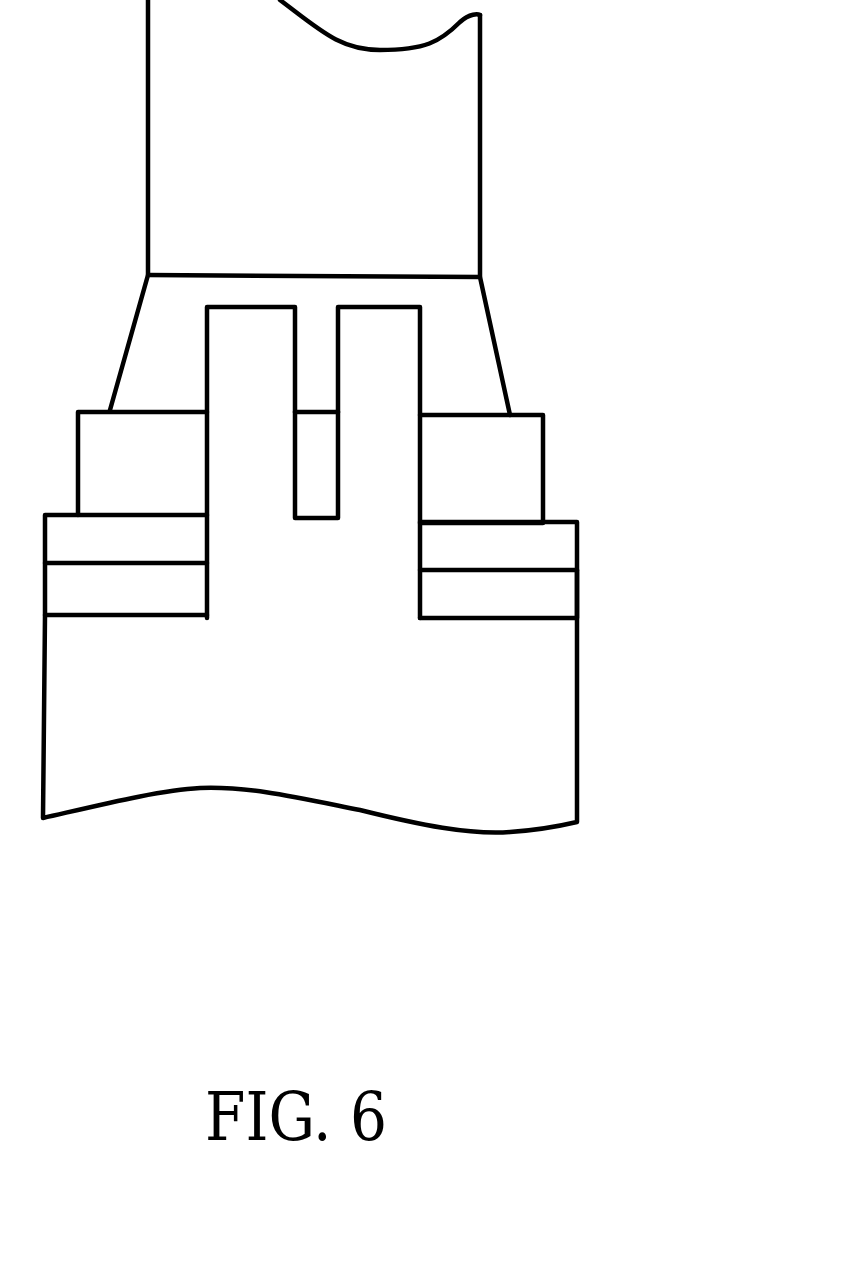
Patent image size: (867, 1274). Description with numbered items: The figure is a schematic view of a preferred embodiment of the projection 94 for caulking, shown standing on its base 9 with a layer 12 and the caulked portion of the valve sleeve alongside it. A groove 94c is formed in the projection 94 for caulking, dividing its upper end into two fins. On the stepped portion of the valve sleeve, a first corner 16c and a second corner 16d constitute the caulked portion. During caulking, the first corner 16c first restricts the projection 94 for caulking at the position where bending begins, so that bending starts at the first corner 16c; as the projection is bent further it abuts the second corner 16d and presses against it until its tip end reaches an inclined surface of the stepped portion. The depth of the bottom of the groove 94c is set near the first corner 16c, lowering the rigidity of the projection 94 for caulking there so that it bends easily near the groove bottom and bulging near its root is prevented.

The projection for caulking 94 is at (400, 478).
The groove 94c is at (298, 345).
The second corner 16d is at (543, 415).
The first corner 16c is at (578, 522).
The layer 12 is at (553, 605).
The substrate 9 is at (530, 770).